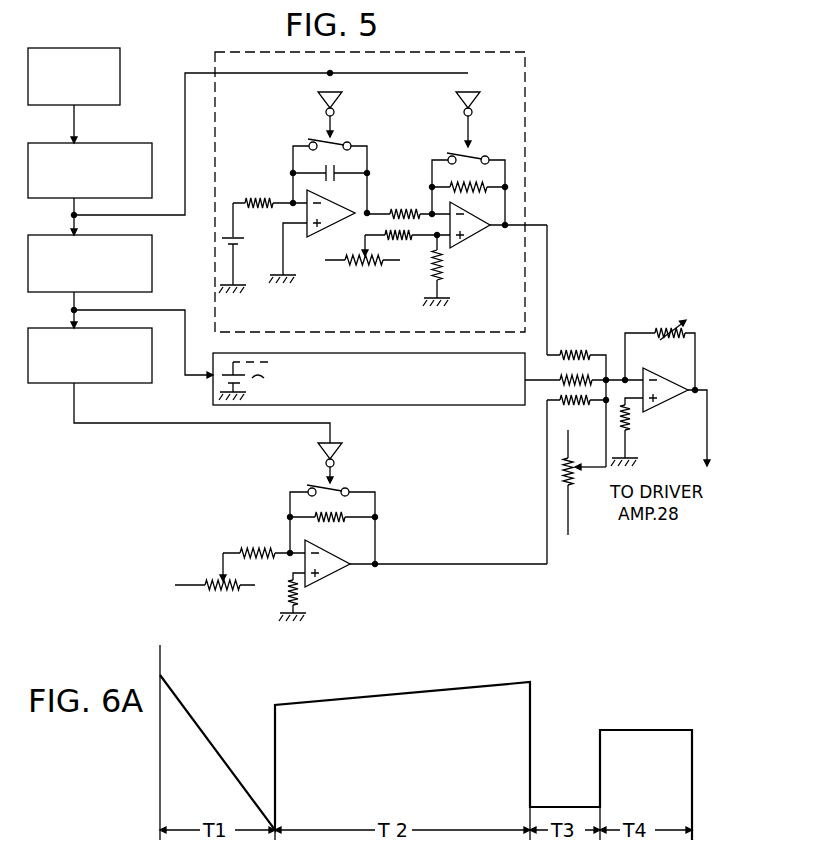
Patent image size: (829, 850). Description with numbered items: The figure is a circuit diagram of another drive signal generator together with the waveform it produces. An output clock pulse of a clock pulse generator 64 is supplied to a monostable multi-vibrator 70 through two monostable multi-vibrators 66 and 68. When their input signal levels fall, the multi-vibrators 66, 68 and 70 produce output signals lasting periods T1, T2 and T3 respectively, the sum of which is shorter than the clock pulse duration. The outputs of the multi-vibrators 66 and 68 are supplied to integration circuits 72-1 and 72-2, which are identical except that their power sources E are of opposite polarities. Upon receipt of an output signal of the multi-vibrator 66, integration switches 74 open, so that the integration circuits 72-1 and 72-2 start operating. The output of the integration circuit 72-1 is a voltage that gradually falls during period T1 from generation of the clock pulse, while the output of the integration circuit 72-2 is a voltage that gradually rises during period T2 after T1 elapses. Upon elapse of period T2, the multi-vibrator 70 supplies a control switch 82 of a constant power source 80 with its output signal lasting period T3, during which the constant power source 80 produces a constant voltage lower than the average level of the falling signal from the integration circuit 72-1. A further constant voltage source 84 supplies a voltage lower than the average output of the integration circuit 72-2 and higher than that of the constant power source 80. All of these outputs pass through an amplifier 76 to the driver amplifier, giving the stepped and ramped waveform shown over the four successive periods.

The clock pulse generator 64 is at (120, 82).
The monostable multi-vibrator 66 is at (134, 143).
The monostable multi-vibrator 68 is at (152, 282).
The monostable multi-vibrator 70 is at (152, 383).
The integration circuit 72-1 is at (525, 97).
The integration circuit 72-2 is at (455, 405).
The integration switch 74 is at (352, 136).
The amplifier 76 is at (668, 400).
The constant power source 80 is at (352, 548).
The control switch 82 is at (364, 472).
The constant voltage source 84 is at (575, 488).